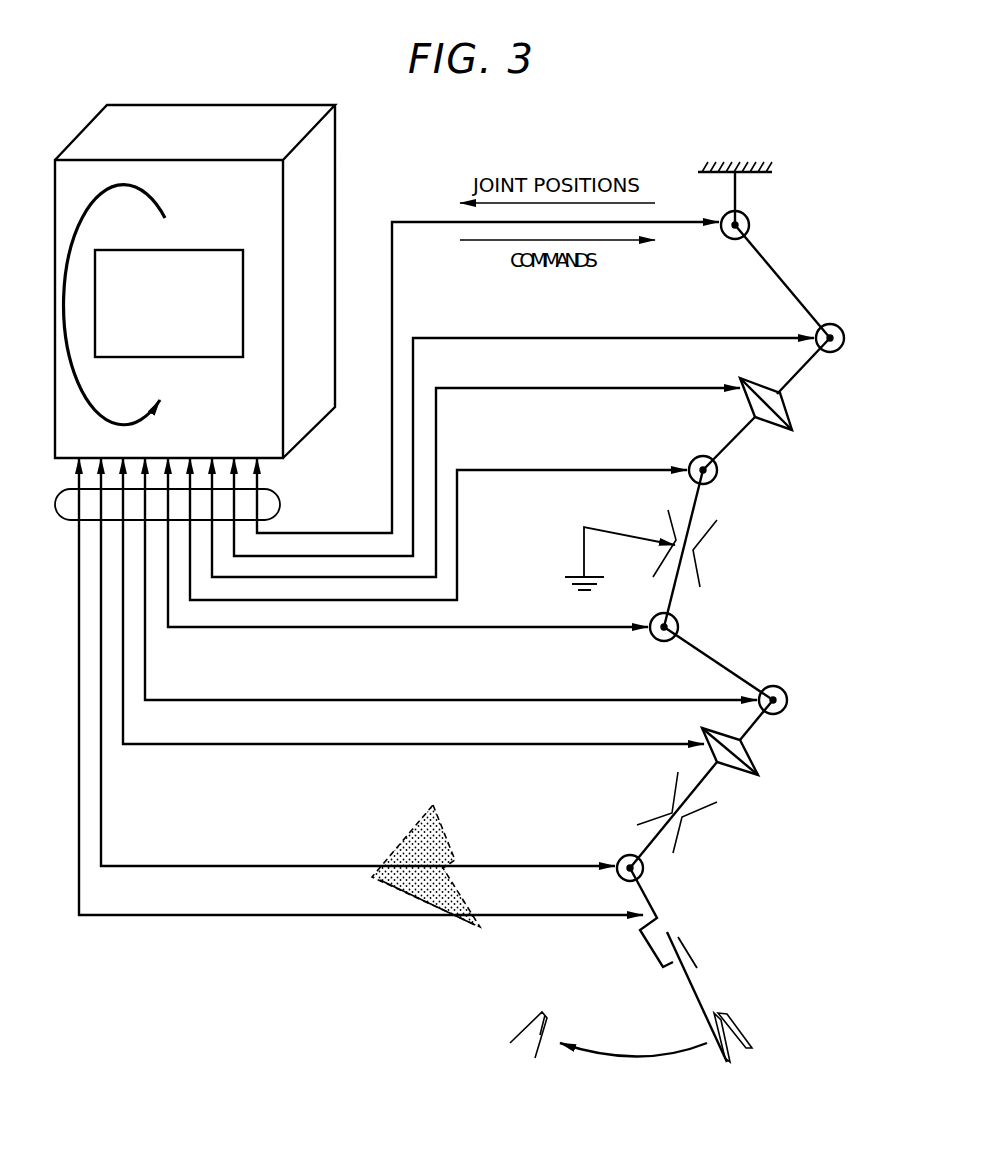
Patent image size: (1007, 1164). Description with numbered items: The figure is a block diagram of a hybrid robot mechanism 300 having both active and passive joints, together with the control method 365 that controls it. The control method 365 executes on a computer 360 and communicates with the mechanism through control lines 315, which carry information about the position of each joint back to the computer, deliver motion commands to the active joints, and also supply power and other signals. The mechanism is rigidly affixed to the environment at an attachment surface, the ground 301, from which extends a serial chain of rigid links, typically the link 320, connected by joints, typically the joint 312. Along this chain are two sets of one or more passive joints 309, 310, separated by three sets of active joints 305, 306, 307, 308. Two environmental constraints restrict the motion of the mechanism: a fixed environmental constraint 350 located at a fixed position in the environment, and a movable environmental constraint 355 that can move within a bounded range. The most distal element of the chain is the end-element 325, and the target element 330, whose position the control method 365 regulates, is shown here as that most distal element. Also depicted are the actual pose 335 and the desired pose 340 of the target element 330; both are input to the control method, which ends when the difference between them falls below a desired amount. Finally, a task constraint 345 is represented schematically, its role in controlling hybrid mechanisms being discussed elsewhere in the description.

The hybrid robot mechanism 300 is at (775, 105).
The ground 301 is at (745, 178).
The first set of active joints 305 is at (872, 213).
The second set of active joints 306 is at (648, 640).
The third set of active joints 307 is at (628, 855).
The third set of active joints 308 is at (683, 978).
The first set of passive joints 309 is at (695, 458).
The second set of passive joints 310 is at (825, 665).
The joint 312 is at (712, 483).
The control lines 315 is at (52, 522).
The rigid link 320 is at (787, 290).
The end-element 325 is at (722, 1018).
The target element 330 is at (750, 1032).
The actual pose 335 is at (742, 1067).
The desired pose 340 is at (515, 1022).
The task constraint 345 is at (395, 845).
The fixed environmental constraint 350 is at (695, 552).
The movable environmental constraint 355 is at (683, 830).
The computer 360 is at (118, 128).
The control method 365 is at (172, 250).